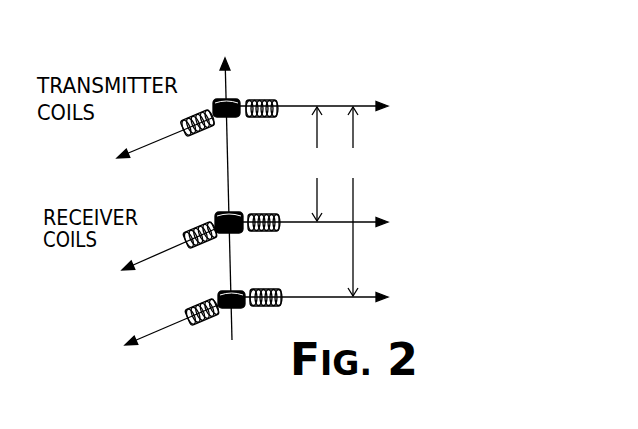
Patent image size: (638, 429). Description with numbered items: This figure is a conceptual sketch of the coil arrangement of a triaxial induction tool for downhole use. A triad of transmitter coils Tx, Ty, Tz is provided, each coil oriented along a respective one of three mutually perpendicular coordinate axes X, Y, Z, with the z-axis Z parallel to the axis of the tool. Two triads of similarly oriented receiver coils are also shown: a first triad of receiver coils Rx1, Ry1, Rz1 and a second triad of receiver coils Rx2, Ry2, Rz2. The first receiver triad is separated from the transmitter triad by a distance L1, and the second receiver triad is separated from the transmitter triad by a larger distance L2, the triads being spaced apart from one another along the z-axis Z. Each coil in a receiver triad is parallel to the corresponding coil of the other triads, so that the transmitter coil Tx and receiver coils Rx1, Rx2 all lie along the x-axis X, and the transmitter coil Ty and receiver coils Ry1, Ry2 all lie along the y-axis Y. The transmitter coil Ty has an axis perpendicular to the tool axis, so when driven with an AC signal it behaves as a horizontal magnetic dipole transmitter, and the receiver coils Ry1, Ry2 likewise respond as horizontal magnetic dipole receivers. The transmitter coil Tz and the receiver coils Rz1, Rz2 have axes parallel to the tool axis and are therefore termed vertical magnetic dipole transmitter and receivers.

The transmitter coil Tx is at (187, 123).
The transmitter coil Ty is at (270, 99).
The transmitter coil Tz is at (221, 96).
The receiver coil Rx1 is at (182, 233).
The receiver coil Ry1 is at (282, 238).
The receiver coil Rz1 is at (215, 209).
The receiver coil Rx2 is at (182, 309).
The receiver coil Ry2 is at (283, 312).
The receiver coil Rz2 is at (217, 284).
The separation distance L1 is at (316, 164).
The separation distance L2 is at (350, 201).
The x-axis X is at (160, 244).
The y-axis Y is at (322, 201).
The z-axis Z is at (226, 189).